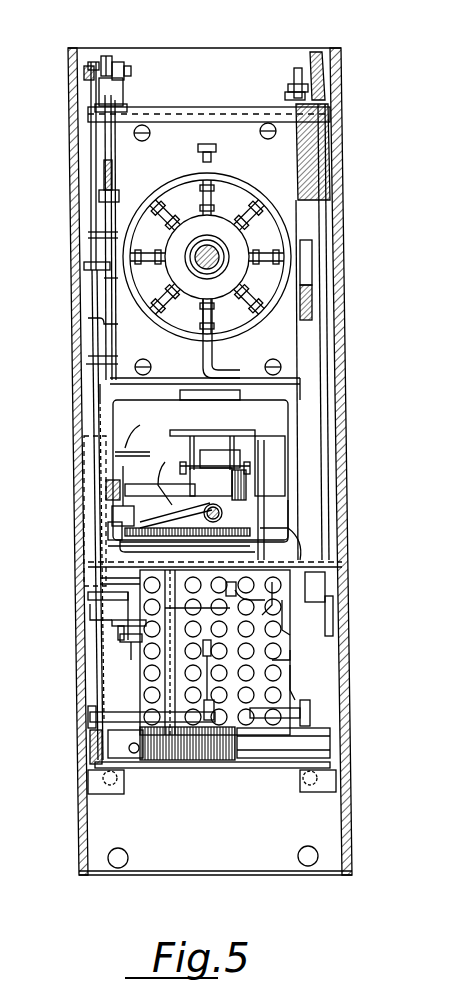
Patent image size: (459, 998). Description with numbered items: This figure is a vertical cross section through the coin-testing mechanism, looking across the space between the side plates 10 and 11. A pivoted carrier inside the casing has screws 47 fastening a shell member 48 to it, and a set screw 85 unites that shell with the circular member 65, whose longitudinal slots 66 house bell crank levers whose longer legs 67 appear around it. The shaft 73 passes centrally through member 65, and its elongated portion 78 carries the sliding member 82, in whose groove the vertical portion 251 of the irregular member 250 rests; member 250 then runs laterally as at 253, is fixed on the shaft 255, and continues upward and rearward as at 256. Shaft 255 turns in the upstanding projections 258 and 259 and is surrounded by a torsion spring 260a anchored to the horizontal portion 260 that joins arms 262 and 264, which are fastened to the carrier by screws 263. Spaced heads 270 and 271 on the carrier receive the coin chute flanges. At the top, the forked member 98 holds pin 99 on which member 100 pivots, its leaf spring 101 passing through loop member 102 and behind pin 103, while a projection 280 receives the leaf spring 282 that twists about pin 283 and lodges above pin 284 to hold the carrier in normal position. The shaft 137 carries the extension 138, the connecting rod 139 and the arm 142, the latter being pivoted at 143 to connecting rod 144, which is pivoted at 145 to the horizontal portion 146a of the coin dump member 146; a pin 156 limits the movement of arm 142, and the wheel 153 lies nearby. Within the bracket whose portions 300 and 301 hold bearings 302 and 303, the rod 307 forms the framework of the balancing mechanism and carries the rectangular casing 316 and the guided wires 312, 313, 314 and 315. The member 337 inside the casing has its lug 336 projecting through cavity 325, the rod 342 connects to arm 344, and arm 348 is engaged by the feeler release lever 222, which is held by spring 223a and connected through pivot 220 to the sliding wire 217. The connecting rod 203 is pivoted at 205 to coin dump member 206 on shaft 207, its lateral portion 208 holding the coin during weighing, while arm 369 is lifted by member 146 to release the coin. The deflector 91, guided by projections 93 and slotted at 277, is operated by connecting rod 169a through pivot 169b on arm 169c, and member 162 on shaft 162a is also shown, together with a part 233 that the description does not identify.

The side plate 10 is at (70, 64).
The side plate 11 is at (340, 68).
The connecting rod 139 is at (90, 133).
The irregularly shaped member 250 is at (95, 664).
The arm 142 is at (113, 175).
The pivot 143 is at (120, 196).
The connecting rod 144 is at (88, 233).
The pin 156 is at (84, 266).
The leaf spring 101 is at (104, 280).
The loop member 102 is at (88, 318).
The pin 103 is at (88, 356).
The pivoted member 100 is at (108, 58).
The forked member 98 is at (120, 66).
The pin 99 is at (130, 72).
The extension 138 is at (112, 100).
The shaft 137 is at (222, 96).
The leaf spring 282 is at (298, 68).
The projection 280 is at (290, 86).
The wheel 153 is at (322, 236).
The screws 47 is at (158, 135).
The circular member 65 is at (218, 172).
The set screw 85 is at (206, 144).
The shell member 48 is at (195, 162).
The sliding member 82 is at (214, 205).
The elongated circular portion 78 is at (216, 222).
The shaft 73 is at (230, 254).
The slots 66 is at (150, 222).
The longer leg 67 is at (182, 214).
The vertical portion 251 is at (224, 310).
The lateral portion 253 is at (201, 353).
The coin directing member 337 is at (219, 376).
The wire 313 is at (278, 397).
The wire 315 is at (126, 428).
The wire 314 is at (204, 430).
The cavity 325 is at (188, 440).
The wire 312 is at (295, 419).
The coin dump member 146 is at (146, 452).
The lug 336 is at (242, 455).
The rod 342 is at (251, 465).
The bracket portion 301 is at (84, 452).
The arm 369 is at (160, 468).
The bearing 302 is at (248, 481).
The bearing 303 is at (106, 490).
The arm 344 is at (195, 500).
The rod 307 is at (256, 512).
The arm 348 is at (150, 520).
The rectangular casing 316 is at (292, 528).
The feeler release mechanism lever 222 is at (112, 512).
The bracket end portion 300 is at (284, 522).
The pivot 205 is at (108, 530).
The shaft 207 is at (305, 560).
The spring 223a is at (256, 546).
The bar 233 is at (108, 548).
The connecting rod 203 is at (100, 581).
The horizontal portion 146a is at (92, 594).
The pivot 145 is at (90, 608).
The pivot 220 is at (120, 638).
The elongated wire 217 is at (130, 650).
The rod member 162 is at (187, 690).
The connecting rod 169a is at (232, 590).
The arm 169c is at (278, 605).
The pivot point 169b is at (284, 626).
The slot 277 is at (228, 612).
The pin 283 is at (326, 598).
The pin 284 is at (280, 658).
The deflector 91 is at (292, 680).
The coin dump member 206 is at (204, 652).
The lateral portion 208 is at (206, 690).
The projection 93 is at (136, 714).
The shaft 162a is at (90, 704).
The shaft 255 is at (336, 742).
The upward rearward portion 256 is at (148, 748).
The upwardly projecting portion 258 is at (88, 760).
The upwardly projecting portion 259 is at (332, 755).
The horizontal portion 260 is at (270, 770).
The torsion spring 260a is at (160, 770).
The arm 262 is at (86, 790).
The screws 263 is at (102, 788).
The arm 264 is at (336, 781).
The spaced head 270 is at (130, 845).
The spaced head 271 is at (306, 847).